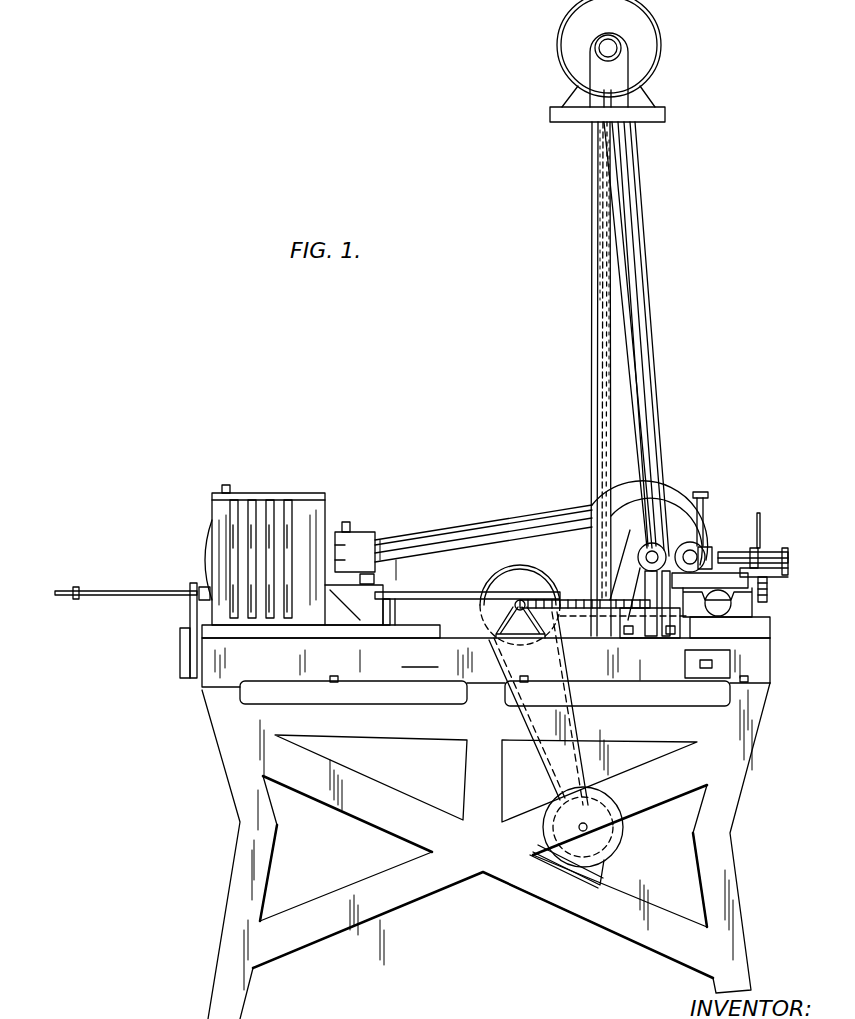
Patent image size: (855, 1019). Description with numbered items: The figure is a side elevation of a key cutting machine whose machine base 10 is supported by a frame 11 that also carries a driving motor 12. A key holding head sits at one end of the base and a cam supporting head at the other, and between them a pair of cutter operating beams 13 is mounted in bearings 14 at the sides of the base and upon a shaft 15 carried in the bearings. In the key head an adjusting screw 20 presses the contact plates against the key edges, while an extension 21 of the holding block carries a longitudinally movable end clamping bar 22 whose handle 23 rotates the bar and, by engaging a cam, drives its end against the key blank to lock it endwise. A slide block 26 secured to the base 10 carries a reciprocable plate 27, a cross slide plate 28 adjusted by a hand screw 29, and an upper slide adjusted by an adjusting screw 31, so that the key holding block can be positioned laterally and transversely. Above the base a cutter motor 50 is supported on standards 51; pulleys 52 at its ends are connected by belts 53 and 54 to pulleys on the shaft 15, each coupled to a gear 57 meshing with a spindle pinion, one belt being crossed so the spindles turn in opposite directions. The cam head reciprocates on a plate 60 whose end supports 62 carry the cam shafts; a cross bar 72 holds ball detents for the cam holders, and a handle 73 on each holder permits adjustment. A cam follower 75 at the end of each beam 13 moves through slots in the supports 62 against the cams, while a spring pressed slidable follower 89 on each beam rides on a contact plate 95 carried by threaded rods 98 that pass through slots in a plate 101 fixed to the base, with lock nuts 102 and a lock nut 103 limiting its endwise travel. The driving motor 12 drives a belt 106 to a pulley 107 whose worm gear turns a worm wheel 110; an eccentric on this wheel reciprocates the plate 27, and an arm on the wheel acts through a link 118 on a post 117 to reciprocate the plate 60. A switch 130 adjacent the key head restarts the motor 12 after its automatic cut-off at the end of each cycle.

The machine base 10 is at (486, 672).
The frame 11 is at (423, 893).
The driving motor 12 is at (613, 837).
The cutter operating beams 13 is at (503, 524).
The bearings 14 is at (647, 622).
The shaft 15 is at (654, 552).
The adjusting screw 20 is at (705, 493).
The extension 21 is at (778, 577).
The end clamping bar 22 is at (768, 552).
The handle 23 is at (760, 525).
The slide block 26 is at (773, 637).
The plate 27 is at (706, 614).
The slide plate 28 is at (696, 597).
The hand screw 29 is at (721, 606).
The adjusting screw 31 is at (694, 551).
The cutter motor 50 is at (653, 66).
The standards 51 is at (596, 173).
The pulleys 52 is at (622, 45).
The belt 53 is at (627, 272).
The belt 54 is at (657, 378).
The gear 57 is at (628, 557).
The plate 60 is at (365, 638).
The end supports 62 is at (326, 508).
The cross bar 72 is at (251, 500).
The handle 73 is at (282, 510).
The cam follower 75 is at (349, 549).
The slidable follower 89 is at (376, 580).
The contact plate 95 is at (350, 588).
The threaded rods 98 is at (115, 590).
The plate 101 is at (190, 607).
The lock nuts 102 is at (200, 590).
The lock nut 103 is at (76, 588).
The belt 106 is at (546, 760).
The pulley 107 is at (523, 582).
The worm wheel 110 is at (544, 635).
The post 117 is at (392, 607).
The link 118 is at (458, 592).
The switch 130 is at (727, 664).